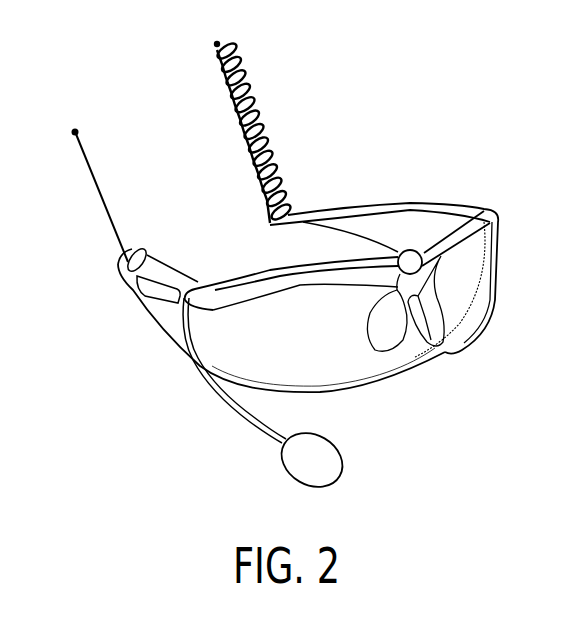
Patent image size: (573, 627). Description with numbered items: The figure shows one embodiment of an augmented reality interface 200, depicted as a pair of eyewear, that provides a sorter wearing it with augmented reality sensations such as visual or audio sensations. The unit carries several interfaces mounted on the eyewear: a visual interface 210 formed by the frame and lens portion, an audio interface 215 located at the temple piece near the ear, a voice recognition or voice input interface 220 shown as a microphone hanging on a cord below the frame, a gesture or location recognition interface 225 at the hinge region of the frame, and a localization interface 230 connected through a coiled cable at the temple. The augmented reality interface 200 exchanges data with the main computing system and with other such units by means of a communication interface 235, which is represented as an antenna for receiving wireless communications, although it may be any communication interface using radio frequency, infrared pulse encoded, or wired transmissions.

The augmented reality interface 200 is at (150, 407).
The visual interface 210 is at (463, 350).
The audio interface 215 is at (166, 317).
The voice recognition or voice input interface 220 is at (287, 473).
The gesture or location recognition interface 225 is at (398, 257).
The localization interface 230 is at (257, 87).
The communication interface 235 is at (98, 198).